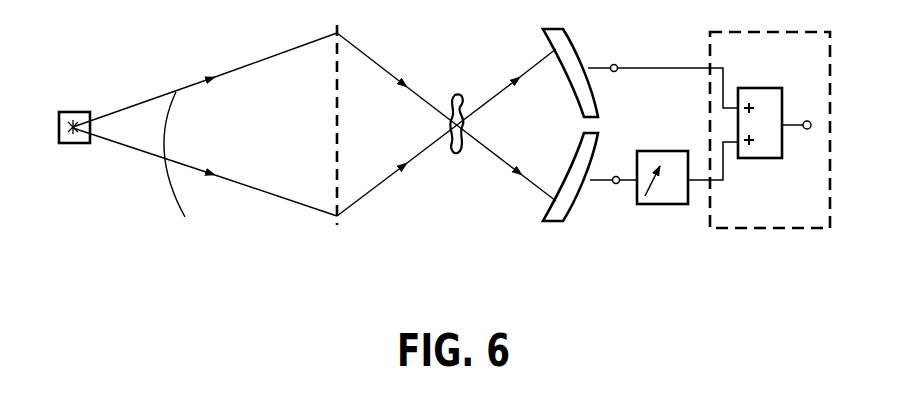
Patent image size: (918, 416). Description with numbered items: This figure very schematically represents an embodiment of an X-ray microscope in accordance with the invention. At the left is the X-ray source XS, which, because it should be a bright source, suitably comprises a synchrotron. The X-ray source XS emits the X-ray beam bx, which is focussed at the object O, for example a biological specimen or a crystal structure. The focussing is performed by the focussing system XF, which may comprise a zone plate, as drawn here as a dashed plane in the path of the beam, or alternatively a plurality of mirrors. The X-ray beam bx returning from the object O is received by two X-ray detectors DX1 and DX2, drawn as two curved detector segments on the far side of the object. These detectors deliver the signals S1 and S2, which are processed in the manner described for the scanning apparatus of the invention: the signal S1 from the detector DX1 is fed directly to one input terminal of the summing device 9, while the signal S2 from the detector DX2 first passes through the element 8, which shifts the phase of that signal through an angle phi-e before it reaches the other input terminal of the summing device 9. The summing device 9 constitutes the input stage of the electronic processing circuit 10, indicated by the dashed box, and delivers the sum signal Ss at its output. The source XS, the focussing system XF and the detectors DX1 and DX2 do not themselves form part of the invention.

The X-ray source XS is at (75, 144).
The X-ray beam bx is at (180, 166).
The focussing system XF is at (344, 208).
The object O is at (466, 150).
The first X-ray detector DX1 is at (575, 42).
The second X-ray detector DX2 is at (565, 211).
The first detector signal S1 is at (617, 44).
The second detector signal S2 is at (616, 184).
The phase-shifting element 8 is at (668, 205).
The summing device 9 is at (757, 159).
The sum signal Ss is at (806, 130).
The electronic processing circuit 10 is at (742, 28).